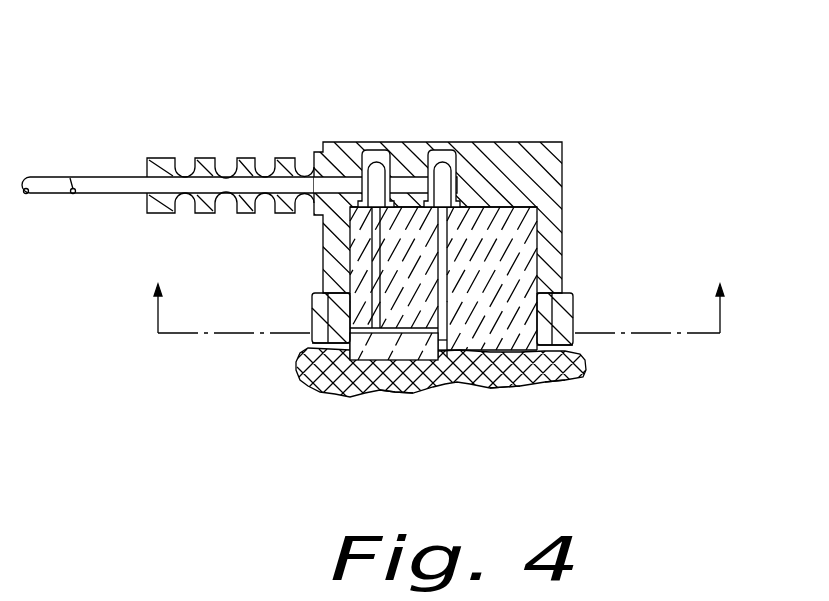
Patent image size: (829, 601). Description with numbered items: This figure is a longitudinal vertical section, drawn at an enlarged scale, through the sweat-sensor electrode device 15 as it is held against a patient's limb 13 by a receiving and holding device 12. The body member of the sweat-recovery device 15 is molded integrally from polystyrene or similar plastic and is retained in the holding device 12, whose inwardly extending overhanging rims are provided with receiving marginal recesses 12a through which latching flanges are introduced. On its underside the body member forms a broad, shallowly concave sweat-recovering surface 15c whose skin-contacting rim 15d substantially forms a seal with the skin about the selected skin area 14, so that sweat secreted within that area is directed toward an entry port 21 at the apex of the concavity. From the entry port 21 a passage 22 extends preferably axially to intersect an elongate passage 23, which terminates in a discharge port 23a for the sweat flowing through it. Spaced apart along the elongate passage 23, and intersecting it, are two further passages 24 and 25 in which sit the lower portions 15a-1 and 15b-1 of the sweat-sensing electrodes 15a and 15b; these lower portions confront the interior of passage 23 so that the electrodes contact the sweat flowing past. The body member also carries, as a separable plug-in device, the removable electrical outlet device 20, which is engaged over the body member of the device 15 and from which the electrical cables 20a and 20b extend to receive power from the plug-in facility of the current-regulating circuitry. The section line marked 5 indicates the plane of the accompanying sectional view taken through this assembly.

The electrical outlet device 20 is at (540, 140).
The electrical cable 20a is at (32, 183).
The electrical cable 20b is at (108, 186).
The sweat-sensing electrode 15b is at (377, 183).
The sweat-sensing electrode 15a is at (443, 183).
The passage 24 is at (485, 210).
The lower portion of sweat-sensing electrode 15a-1 is at (443, 265).
The sweat-sensor electrode device 15 is at (505, 270).
The lower portion of sweat-sensing electrode 15b-1 is at (372, 258).
The passage 25 is at (350, 285).
The receiving marginal recess 12a is at (338, 302).
The receiving and holding device 12 is at (575, 306).
The discharge port 23a is at (320, 341).
The passage 23 is at (350, 360).
The selected area of skin 14 is at (398, 385).
The passage 22 is at (438, 343).
The entry port 21 is at (443, 342).
The sweat-recovering surface 15c is at (503, 383).
The skin-contacting rim 15d is at (558, 375).
The limb 13 is at (582, 365).
The section line 5- 5 is at (440, 298).